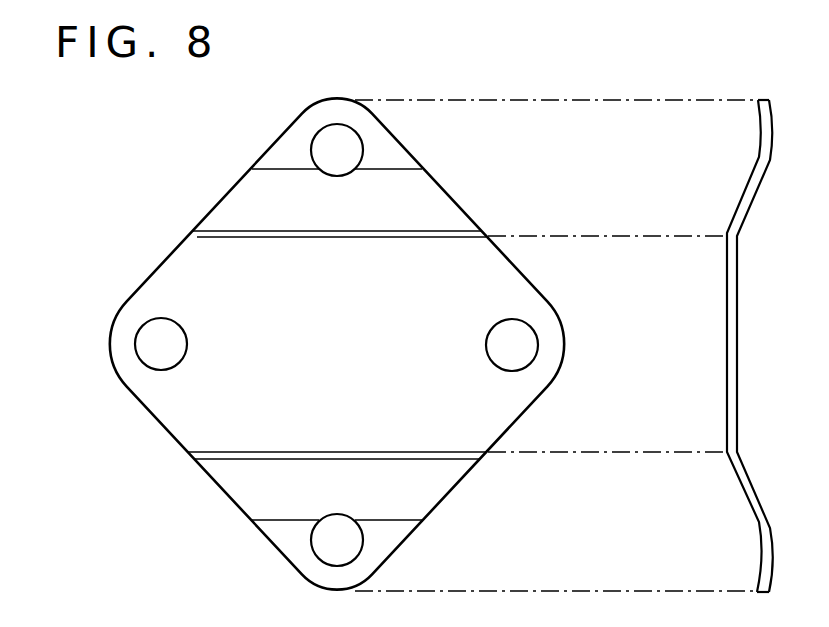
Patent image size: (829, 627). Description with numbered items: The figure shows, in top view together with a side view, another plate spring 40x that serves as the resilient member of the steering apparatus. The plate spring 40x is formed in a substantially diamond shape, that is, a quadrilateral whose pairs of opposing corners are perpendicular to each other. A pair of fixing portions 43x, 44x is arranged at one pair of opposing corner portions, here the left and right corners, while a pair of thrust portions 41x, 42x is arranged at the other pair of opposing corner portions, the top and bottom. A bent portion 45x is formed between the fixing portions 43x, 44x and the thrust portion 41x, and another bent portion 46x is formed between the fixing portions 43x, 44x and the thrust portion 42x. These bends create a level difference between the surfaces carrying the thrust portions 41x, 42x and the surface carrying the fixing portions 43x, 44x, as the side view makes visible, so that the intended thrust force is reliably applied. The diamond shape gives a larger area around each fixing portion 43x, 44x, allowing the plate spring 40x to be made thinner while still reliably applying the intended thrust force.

The plate spring 40x is at (158, 252).
The thrust portion 41x is at (336, 124).
The thrust portion 42x is at (339, 566).
The fixing portion 43x is at (135, 344).
The fixing portion 44x is at (538, 345).
The bent portion 45x is at (210, 234).
The bent portion 46x is at (197, 455).